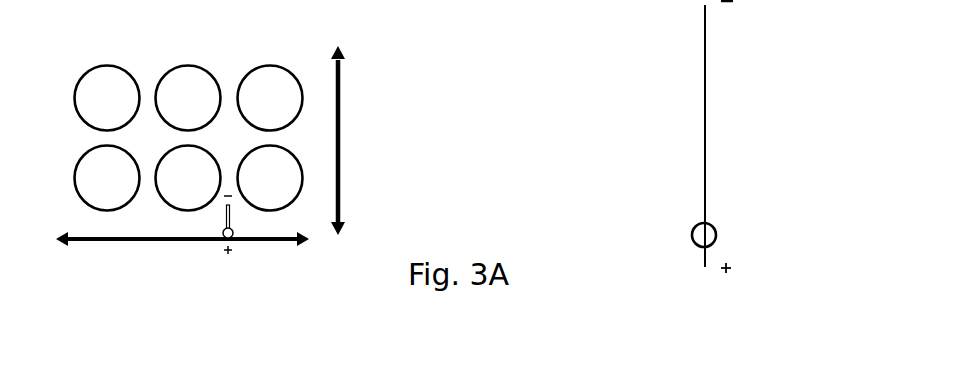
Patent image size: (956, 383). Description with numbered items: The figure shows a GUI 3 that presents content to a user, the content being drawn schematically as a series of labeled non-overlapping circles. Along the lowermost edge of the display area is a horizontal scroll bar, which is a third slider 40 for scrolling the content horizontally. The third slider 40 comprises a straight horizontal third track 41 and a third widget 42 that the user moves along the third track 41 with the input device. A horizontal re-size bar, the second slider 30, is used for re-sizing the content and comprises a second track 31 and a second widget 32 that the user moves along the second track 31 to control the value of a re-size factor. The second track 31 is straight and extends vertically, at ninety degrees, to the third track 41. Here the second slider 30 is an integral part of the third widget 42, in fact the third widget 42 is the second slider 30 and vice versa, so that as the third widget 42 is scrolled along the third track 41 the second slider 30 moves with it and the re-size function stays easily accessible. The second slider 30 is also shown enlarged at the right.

The GUI 3 is at (45, 135).
The second slider 30 is at (494, 142).
The second track 31 is at (232, 214).
The second widget 32 is at (222, 231).
The third slider 40 is at (196, 170).
The third track 41 is at (155, 243).
The third widget 42 is at (237, 250).